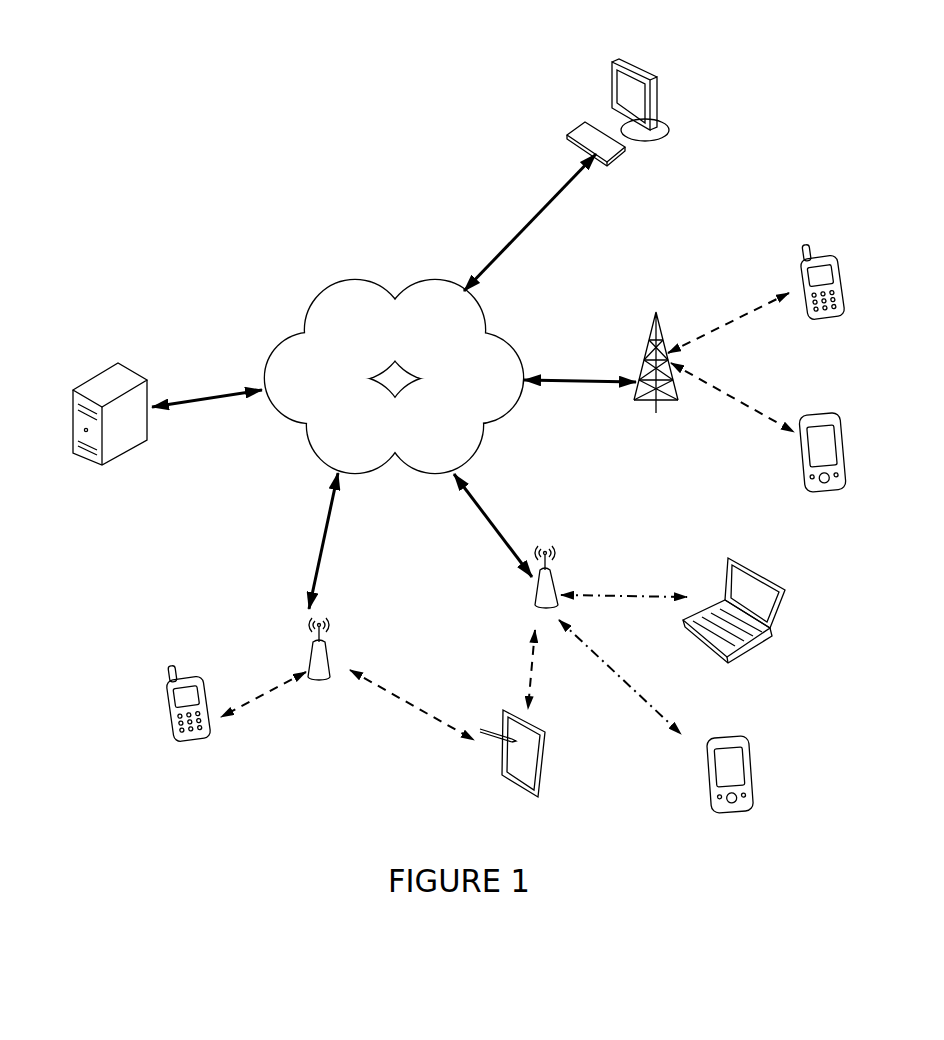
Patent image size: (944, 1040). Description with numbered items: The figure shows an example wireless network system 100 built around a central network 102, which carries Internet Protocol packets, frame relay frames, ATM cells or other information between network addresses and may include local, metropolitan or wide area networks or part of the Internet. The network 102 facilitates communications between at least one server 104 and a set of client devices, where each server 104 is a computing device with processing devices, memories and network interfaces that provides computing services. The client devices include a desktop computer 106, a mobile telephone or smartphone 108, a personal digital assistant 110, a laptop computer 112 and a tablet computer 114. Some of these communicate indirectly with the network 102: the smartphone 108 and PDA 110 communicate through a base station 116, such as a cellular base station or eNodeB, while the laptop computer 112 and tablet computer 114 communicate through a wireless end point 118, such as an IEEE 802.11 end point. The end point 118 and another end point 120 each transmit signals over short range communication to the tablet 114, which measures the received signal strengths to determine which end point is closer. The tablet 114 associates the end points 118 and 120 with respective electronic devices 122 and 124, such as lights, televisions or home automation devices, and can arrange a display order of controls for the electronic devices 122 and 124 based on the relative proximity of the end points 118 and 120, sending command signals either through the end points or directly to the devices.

The system 100 is at (230, 152).
The network 102 is at (310, 297).
The server 104 is at (85, 382).
The desktop computer 106 is at (607, 60).
The mobile telephone or smartphone 108 is at (838, 268).
The personal digital assistant (PDA) 110 is at (833, 428).
The laptop computer 112 is at (787, 600).
The tablet computer 114 is at (552, 758).
The base station 116 is at (675, 402).
The wireless end point 118 is at (557, 583).
The end point 120 is at (328, 652).
The electronic device 122 is at (745, 747).
The electronic device 124 is at (207, 685).